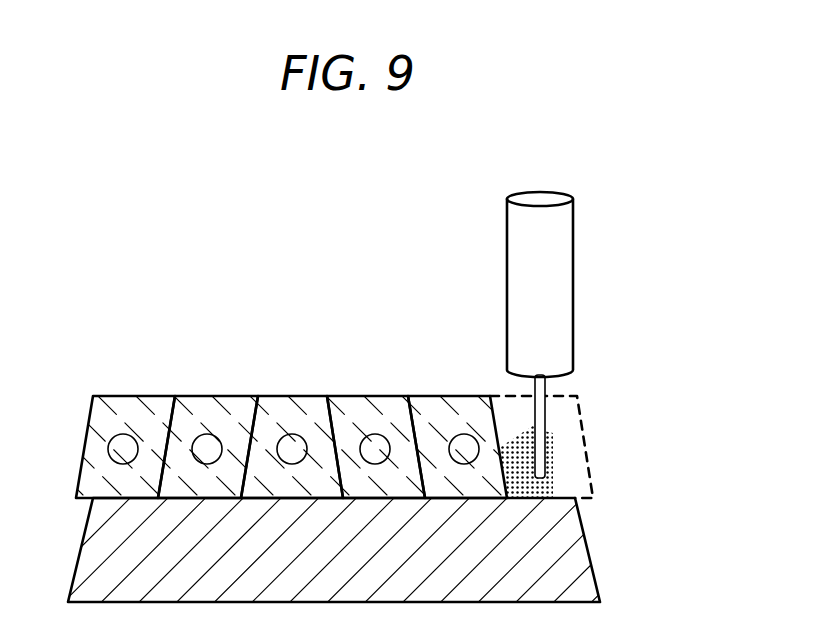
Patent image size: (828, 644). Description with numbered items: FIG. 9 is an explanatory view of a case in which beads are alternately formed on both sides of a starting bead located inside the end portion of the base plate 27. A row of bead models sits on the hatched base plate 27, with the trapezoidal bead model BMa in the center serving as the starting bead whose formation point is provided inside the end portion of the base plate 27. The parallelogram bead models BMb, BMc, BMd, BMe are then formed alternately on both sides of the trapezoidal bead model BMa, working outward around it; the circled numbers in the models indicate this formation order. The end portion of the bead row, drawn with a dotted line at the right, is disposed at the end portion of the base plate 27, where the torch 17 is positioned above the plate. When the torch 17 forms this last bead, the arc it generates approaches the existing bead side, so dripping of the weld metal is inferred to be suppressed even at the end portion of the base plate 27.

The torch 17 is at (507, 207).
The base plate 27 is at (590, 560).
The trapezoidal bead model BMa is at (295, 410).
The parallelogram bead model BMb is at (373, 410).
The parallelogram bead model BMc is at (215, 410).
The parallelogram bead model BMd is at (450, 410).
The parallelogram bead model BMe is at (130, 410).